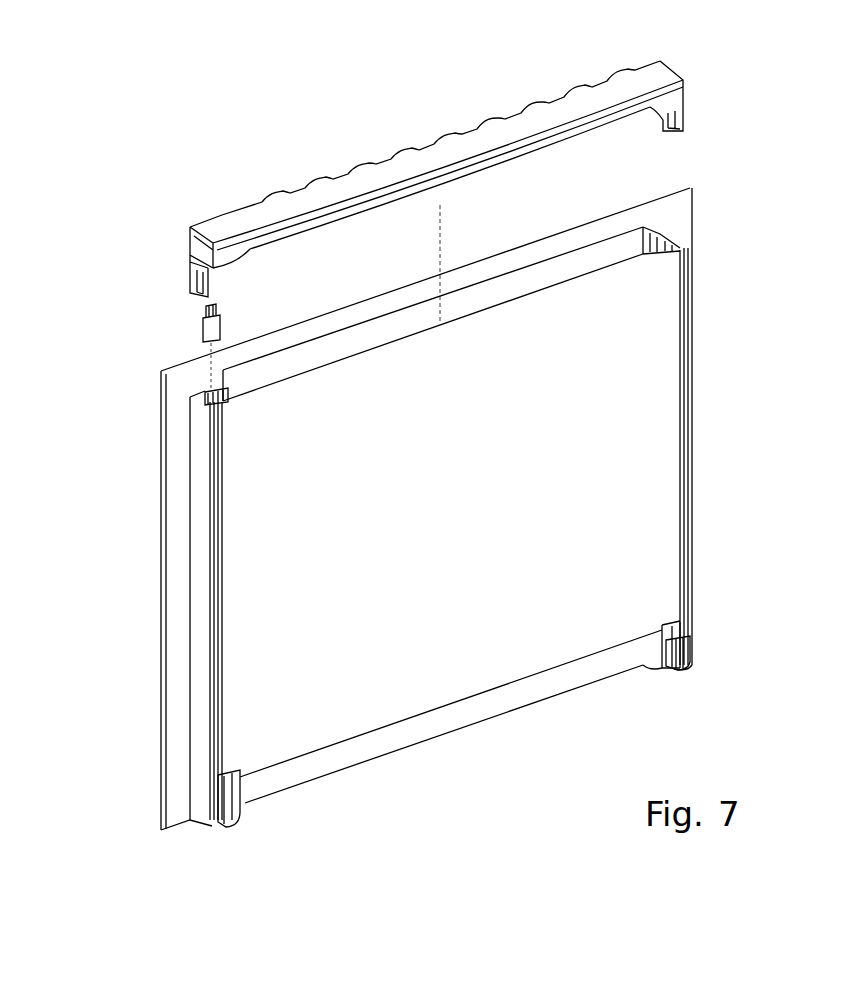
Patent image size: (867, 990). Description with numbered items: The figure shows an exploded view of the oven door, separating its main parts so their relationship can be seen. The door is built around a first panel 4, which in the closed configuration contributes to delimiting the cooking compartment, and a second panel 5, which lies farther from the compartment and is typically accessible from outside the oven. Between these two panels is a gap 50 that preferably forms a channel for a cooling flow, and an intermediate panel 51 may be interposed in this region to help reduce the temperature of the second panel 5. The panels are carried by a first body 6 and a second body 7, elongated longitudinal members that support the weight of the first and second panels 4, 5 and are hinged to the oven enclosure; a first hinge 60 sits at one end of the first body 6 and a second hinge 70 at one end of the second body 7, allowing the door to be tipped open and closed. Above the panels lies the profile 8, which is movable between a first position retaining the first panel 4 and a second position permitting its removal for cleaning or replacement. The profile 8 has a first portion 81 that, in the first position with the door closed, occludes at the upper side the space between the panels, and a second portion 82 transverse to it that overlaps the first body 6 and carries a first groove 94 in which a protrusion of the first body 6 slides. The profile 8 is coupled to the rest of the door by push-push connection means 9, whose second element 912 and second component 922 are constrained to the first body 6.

The profile 8 is at (397, 168).
The first portion 81 is at (406, 160).
The second portion 82 is at (176, 247).
The first groove 94 is at (184, 298).
The connection means 9 is at (288, 329).
The second element 912 is at (242, 324).
The second panel 5 is at (152, 702).
The first body 6 is at (188, 595).
The first hinge 60 is at (250, 816).
The second body 7 is at (634, 655).
The second hinge 70 is at (667, 678).
The gap 50 is at (499, 277).
The intermediate panel 51 is at (495, 260).
The second component 922 is at (658, 234).
The first panel 4 is at (468, 512).